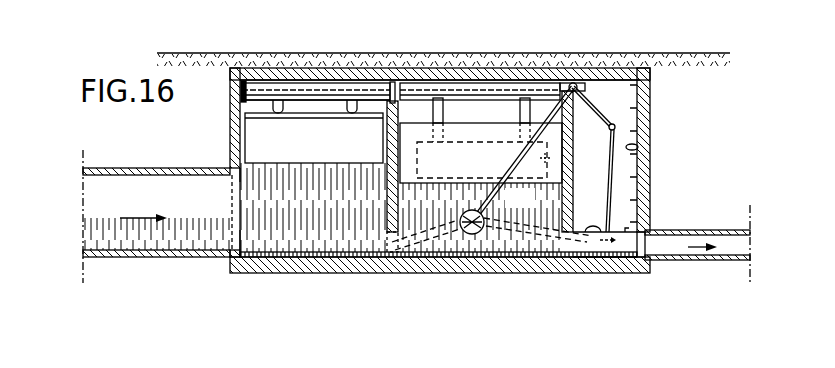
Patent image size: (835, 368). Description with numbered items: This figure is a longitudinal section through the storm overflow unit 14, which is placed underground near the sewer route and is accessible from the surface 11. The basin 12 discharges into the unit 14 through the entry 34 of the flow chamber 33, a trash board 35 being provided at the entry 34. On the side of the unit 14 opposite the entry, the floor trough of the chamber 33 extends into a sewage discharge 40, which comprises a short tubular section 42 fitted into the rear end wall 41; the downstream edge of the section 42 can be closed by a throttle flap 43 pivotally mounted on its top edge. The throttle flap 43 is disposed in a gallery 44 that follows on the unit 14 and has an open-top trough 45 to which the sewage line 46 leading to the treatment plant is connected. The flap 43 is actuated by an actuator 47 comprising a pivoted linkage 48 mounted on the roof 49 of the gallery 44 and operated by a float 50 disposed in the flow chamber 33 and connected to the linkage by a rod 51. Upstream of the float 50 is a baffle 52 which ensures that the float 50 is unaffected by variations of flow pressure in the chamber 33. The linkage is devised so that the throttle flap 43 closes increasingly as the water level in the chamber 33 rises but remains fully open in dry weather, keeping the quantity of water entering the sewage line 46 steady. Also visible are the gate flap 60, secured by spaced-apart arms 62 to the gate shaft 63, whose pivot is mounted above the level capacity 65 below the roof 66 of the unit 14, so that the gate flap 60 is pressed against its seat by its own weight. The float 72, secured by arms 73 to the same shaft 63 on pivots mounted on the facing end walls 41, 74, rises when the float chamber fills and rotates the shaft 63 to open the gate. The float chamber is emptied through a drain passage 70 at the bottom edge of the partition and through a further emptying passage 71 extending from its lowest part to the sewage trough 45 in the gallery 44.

The surface 11 is at (549, 67).
The basin 12 is at (177, 240).
The storm overflow unit 14 is at (508, 49).
The flow chamber 33 is at (298, 222).
The entry 34 is at (238, 238).
The trash board 35 is at (240, 176).
The sewage discharge 40 is at (567, 237).
The rear end wall 41 is at (574, 178).
The tubular section 42 is at (572, 243).
The throttle flap 43 is at (597, 235).
The gallery 44 is at (639, 152).
The open-top trough 45 is at (645, 232).
The sewage line 46 is at (722, 237).
The actuator 47 is at (616, 111).
The pivoted linkage 48 is at (536, 154).
The roof 49 is at (591, 68).
The float 50 is at (470, 243).
The rod 51 is at (493, 190).
The baffle 52 is at (387, 175).
The gate flap 60 is at (307, 145).
The arms 62 is at (275, 114).
The gate shaft 63 is at (411, 105).
The level capacity 65 is at (443, 100).
The roof 66 is at (330, 68).
The drain passage 70 is at (438, 243).
The emptying passage 71 is at (535, 237).
The float 72 is at (556, 164).
The arms 73 is at (505, 110).
The end wall 74 is at (230, 118).